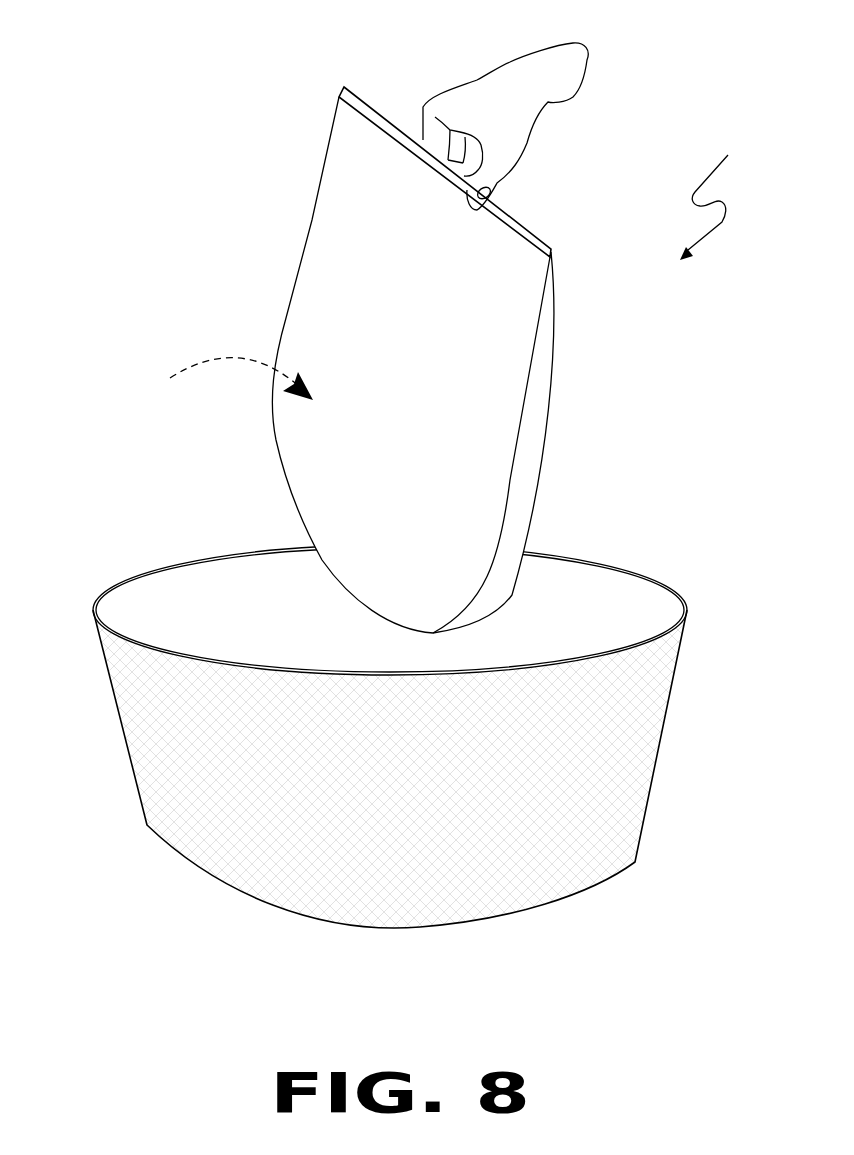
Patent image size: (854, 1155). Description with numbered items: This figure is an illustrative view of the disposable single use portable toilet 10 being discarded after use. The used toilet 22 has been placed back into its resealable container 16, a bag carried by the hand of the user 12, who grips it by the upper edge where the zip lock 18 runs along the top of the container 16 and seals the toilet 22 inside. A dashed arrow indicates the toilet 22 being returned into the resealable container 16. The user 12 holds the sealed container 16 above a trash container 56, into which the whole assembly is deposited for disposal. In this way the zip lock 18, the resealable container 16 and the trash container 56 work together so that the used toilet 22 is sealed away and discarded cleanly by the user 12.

The disposable toilet system 10 is at (717, 187).
The user 12 is at (478, 80).
The resealable container 16 is at (315, 207).
The zip lock 18 is at (365, 105).
The toilet 22 is at (219, 379).
The trash container 56 is at (160, 590).